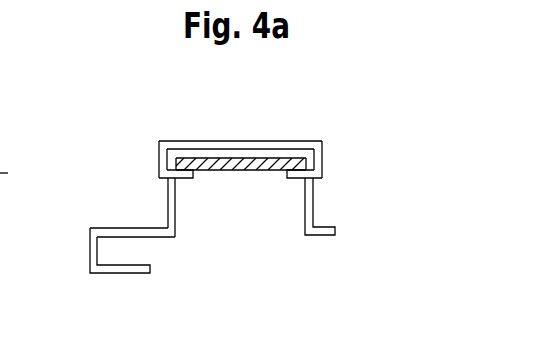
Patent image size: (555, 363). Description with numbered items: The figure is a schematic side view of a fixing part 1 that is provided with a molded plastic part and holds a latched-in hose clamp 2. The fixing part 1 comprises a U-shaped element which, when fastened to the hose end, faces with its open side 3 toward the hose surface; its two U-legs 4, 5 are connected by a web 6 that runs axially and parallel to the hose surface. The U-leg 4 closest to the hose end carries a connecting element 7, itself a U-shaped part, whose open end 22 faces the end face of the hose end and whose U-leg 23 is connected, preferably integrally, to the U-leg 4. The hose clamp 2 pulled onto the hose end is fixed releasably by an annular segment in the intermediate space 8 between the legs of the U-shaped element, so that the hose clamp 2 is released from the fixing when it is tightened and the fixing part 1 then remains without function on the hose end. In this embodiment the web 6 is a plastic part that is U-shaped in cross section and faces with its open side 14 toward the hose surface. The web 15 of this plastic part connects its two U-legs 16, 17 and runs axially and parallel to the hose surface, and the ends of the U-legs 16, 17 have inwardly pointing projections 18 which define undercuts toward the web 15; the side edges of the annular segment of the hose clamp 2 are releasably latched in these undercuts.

The fixing part 1 is at (128, 131).
The hose clamp 2 is at (259, 156).
The open side 3 is at (272, 241).
The U-leg 4 is at (170, 206).
The U-leg 5 is at (315, 214).
The web 6 is at (226, 156).
The connecting element 7 is at (65, 292).
The intermediate space 8 is at (272, 200).
The open side 14 is at (229, 180).
The web of the plastic part 15 is at (186, 145).
The U-leg of the plastic part 16 is at (160, 152).
The U-leg of the plastic part 17 is at (320, 155).
The inwardly pointing projection 18 is at (180, 172).
The open end 22 is at (158, 252).
The U-leg of the connecting element 23 is at (112, 232).